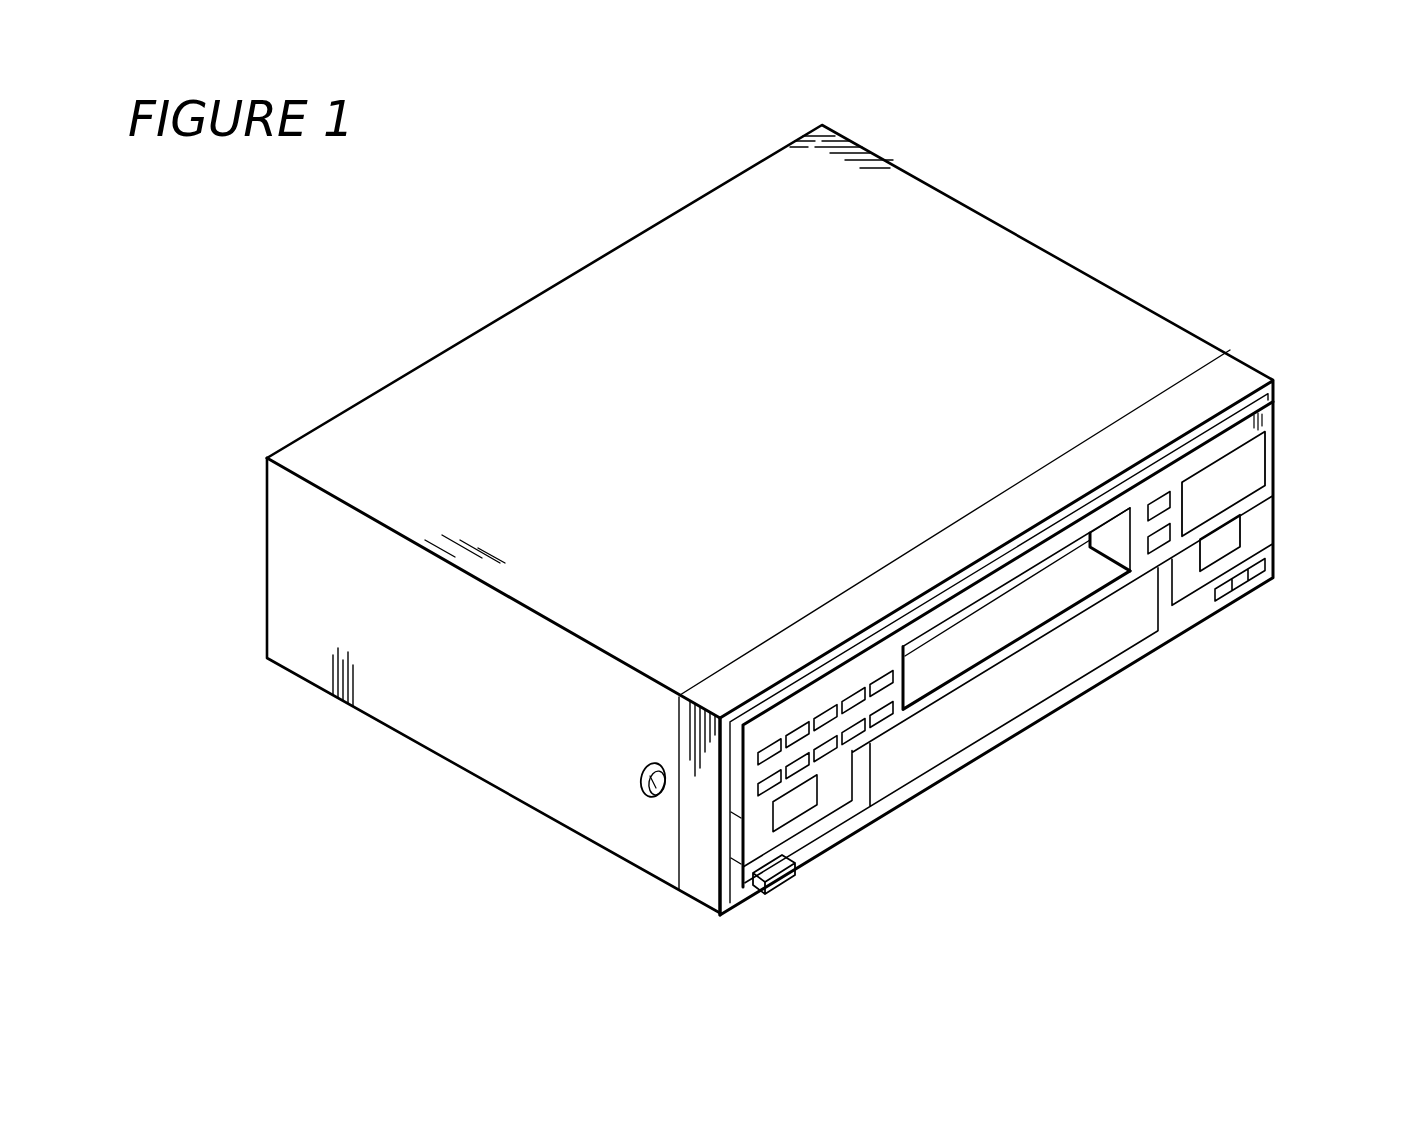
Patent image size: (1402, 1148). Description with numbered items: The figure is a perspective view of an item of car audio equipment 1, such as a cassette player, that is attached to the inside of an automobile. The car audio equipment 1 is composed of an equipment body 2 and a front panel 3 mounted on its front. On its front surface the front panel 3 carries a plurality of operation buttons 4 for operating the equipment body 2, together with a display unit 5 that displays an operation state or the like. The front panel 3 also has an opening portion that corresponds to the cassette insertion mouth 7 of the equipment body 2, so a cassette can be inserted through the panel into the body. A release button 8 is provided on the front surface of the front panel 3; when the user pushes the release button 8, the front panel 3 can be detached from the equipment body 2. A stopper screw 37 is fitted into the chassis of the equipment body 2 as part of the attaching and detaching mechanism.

The car audio equipment 1 is at (1112, 217).
The equipment body 2 is at (1142, 340).
The front panel 3 is at (1177, 620).
The operation buttons 4 is at (1262, 528).
The display unit 5 is at (1037, 690).
The cassette insertion mouth 7 is at (1000, 588).
The release button 8 is at (782, 872).
The stopper screw 37 is at (643, 787).